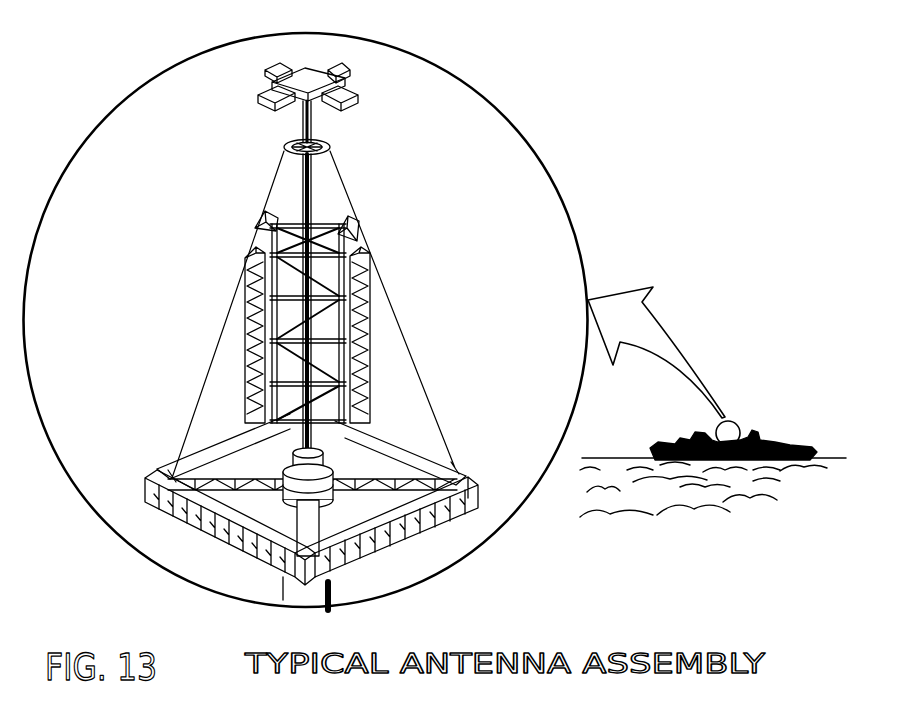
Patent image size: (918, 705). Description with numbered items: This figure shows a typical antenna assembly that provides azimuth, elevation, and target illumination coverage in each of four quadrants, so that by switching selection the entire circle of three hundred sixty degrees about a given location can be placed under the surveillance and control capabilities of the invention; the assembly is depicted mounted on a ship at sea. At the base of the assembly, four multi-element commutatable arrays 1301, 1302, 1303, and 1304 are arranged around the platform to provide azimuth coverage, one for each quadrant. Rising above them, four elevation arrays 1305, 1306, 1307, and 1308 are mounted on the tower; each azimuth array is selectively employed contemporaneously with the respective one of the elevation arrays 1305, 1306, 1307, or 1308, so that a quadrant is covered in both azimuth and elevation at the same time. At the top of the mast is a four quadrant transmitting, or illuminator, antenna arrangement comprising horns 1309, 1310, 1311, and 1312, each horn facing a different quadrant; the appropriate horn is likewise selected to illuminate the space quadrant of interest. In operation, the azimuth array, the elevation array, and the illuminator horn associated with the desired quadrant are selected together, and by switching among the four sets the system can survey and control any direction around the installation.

The multi-element commutatable array 1301 is at (377, 547).
The multi-element commutatable array 1302 is at (417, 450).
The multi-element commutatable array 1303 is at (212, 448).
The multi-element commutatable array 1304 is at (224, 536).
The elevation array 1305 is at (368, 316).
The elevation array 1306 is at (353, 238).
The elevation array 1307 is at (258, 214).
The elevation array 1308 is at (244, 312).
The horn 1309 is at (347, 104).
The horn 1310 is at (348, 75).
The horn 1311 is at (278, 64).
The horn 1312 is at (262, 102).